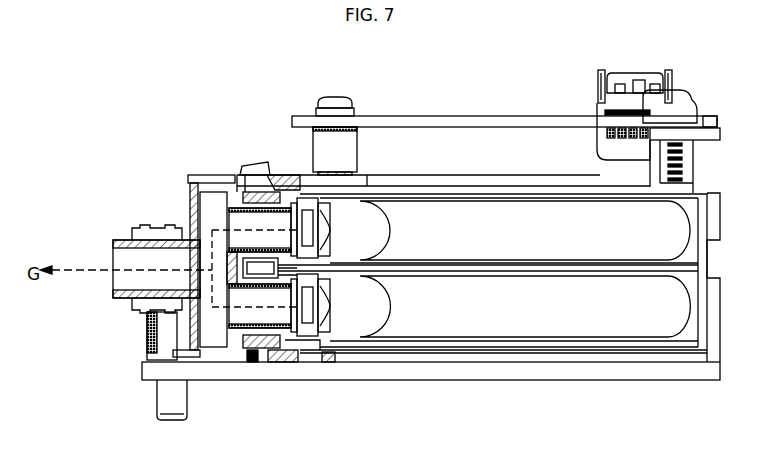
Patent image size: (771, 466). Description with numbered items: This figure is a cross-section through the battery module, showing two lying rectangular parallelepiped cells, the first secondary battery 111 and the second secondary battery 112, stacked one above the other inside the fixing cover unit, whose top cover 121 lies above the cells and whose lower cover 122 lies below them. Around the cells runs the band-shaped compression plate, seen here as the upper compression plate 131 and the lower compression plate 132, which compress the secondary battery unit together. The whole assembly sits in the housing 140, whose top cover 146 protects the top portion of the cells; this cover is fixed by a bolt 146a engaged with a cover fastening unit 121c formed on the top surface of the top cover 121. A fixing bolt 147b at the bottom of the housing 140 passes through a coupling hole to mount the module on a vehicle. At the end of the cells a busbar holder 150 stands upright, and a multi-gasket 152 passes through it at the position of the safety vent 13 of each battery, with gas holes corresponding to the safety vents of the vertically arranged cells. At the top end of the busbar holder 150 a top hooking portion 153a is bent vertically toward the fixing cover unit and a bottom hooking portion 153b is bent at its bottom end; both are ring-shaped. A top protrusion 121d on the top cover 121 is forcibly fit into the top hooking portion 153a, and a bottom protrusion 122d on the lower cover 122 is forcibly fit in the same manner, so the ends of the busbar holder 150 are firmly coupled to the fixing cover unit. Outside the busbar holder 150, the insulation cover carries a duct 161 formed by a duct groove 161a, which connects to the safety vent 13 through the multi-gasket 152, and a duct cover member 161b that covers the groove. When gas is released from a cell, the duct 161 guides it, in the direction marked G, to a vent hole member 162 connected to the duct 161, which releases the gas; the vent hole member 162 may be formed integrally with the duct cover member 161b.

The safety vent 13 is at (340, 257).
The first secondary battery 111 is at (530, 311).
The second secondary battery 112 is at (530, 236).
The top cover 121 is at (572, 187).
The cover fastening unit 121c is at (350, 147).
The top protrusion 121d is at (311, 150).
The lower cover 122 is at (593, 347).
The bottom protrusion 122d is at (310, 355).
The upper compression plate 131 is at (465, 185).
The lower compression plate 132 is at (497, 362).
The housing 140 is at (670, 372).
The top cover 146 is at (518, 126).
The bolt 146a is at (336, 97).
The fixing bolt 147b is at (165, 395).
The busbar holder 150 is at (252, 362).
The multi-gasket 152 is at (208, 322).
The top hooking portion 153a is at (248, 163).
The bottom hooking portion 153b is at (290, 362).
The duct 161 is at (168, 240).
The duct groove 161a is at (213, 200).
The duct cover member 161b is at (192, 202).
The vent hole member 162 is at (113, 292).